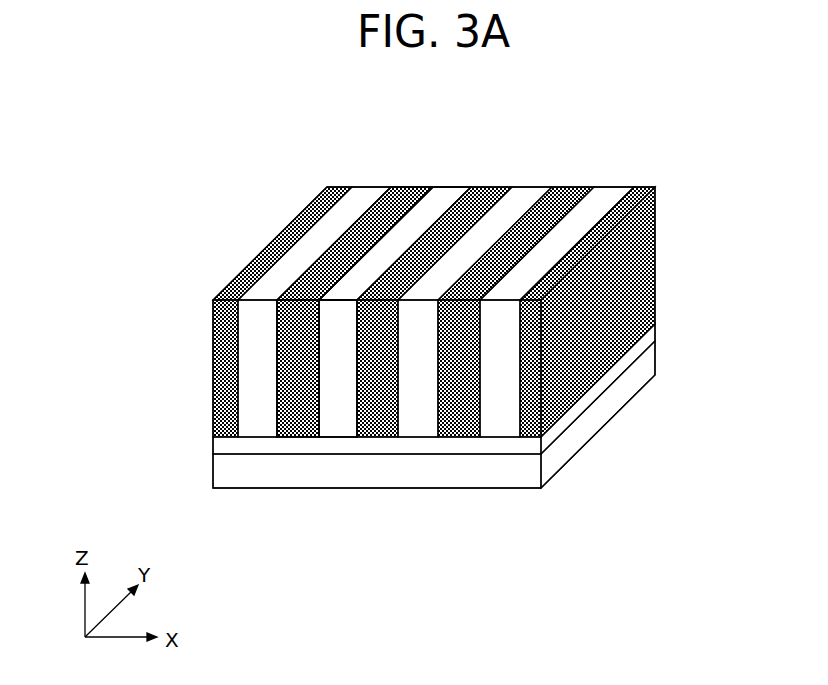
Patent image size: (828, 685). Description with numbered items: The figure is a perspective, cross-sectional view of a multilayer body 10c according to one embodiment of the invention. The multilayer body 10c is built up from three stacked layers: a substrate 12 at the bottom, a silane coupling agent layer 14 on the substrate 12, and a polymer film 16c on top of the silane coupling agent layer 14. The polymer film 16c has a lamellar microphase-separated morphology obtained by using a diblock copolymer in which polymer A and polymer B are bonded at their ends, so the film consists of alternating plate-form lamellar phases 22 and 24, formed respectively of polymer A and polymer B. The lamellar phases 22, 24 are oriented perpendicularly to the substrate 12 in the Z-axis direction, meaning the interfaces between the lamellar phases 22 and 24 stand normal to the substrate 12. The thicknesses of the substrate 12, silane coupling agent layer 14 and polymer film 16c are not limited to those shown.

The multilayer body 10c is at (619, 137).
The substrate 12 is at (222, 472).
The silane coupling agent layer 14 is at (215, 445).
The polymer film 16c is at (200, 300).
The lamellar phase 22 is at (407, 188).
The lamellar phase 24 is at (448, 188).